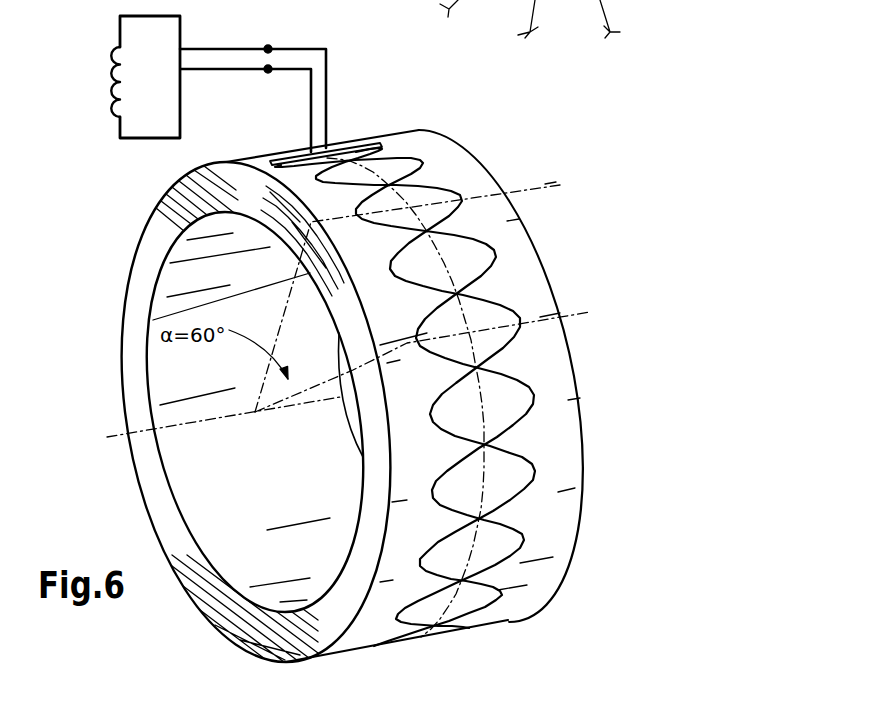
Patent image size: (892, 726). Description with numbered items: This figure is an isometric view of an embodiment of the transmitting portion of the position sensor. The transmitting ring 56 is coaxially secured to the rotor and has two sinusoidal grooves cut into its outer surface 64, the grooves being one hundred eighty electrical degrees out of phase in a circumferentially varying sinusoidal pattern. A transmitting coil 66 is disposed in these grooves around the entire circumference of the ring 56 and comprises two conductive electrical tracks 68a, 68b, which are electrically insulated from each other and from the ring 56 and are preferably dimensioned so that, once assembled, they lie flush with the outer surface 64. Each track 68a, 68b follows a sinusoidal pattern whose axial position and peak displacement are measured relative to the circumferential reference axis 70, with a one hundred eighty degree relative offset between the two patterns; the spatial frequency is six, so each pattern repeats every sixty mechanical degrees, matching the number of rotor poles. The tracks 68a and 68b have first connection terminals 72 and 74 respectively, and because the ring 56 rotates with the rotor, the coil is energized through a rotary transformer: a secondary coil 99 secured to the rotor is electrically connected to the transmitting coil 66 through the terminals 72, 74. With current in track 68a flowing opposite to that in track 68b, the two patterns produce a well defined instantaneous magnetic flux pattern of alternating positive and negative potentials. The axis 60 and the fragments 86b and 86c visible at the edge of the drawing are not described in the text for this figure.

The transmitting ring 56 is at (127, 241).
The longitudinal axis 60 is at (198, 422).
The outer surface 64 is at (490, 218).
The transmitting coil 66 is at (303, 144).
The conductive electrical track 68a is at (452, 191).
The conductive electrical track 68b is at (496, 250).
The circumferential reference axis 70 is at (379, 163).
The first connection terminal 72 is at (268, 45).
The first connection terminal 74 is at (268, 73).
The secondary coil 99 is at (127, 80).
The antenna branch 86b is at (605, 10).
The antenna branch 86c is at (532, 10).